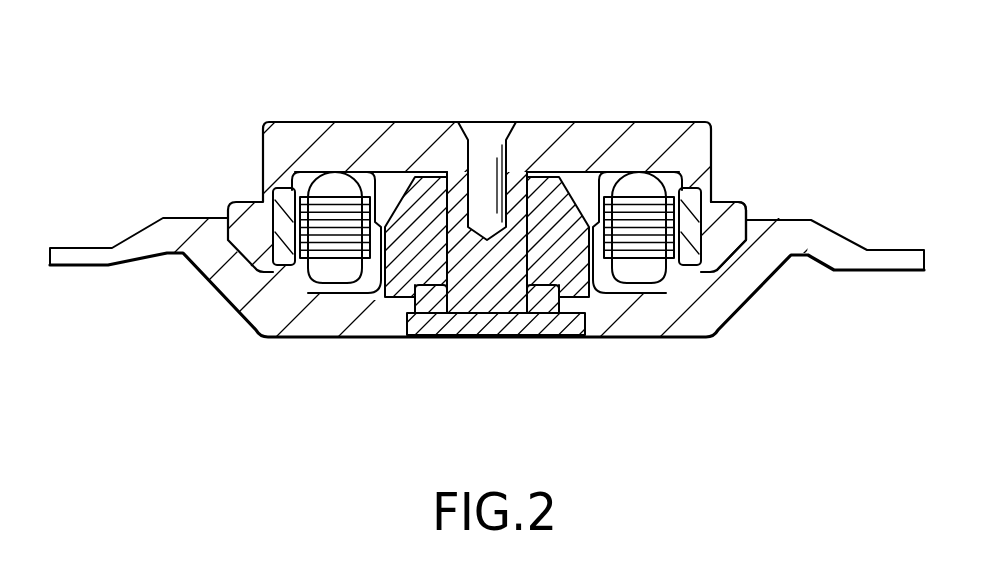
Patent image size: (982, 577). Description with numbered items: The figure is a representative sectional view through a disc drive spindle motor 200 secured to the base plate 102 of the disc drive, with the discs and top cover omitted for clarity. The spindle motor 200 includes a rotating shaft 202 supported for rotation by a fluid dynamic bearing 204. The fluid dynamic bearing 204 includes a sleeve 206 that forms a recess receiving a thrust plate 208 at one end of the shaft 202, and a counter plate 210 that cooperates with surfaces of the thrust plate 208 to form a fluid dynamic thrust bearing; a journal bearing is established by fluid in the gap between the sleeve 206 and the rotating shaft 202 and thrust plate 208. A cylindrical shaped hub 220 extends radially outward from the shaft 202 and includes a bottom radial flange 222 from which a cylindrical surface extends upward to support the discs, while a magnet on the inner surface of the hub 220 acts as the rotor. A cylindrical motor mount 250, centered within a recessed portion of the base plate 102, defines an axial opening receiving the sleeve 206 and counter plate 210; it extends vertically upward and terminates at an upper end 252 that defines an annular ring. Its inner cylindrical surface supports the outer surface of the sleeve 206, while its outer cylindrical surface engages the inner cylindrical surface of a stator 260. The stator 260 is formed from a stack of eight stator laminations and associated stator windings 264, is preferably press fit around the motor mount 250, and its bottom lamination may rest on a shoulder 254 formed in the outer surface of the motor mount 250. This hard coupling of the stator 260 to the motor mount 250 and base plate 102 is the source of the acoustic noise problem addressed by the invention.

The spindle motor 200 is at (259, 94).
The base plate 102 is at (123, 257).
The rotating shaft 202 is at (502, 303).
The fluid dynamic bearing 204 is at (431, 354).
The sleeve 206 is at (548, 195).
The thrust plate 208 is at (543, 305).
The counter plate 210 is at (458, 327).
The hub 220 is at (277, 143).
The bottom radial flange 222 is at (723, 200).
The cylindrical motor mount 250 is at (597, 253).
The upper end 252 is at (383, 225).
The shoulder 254 is at (367, 292).
The stator 260 is at (293, 282).
The stator windings 264 is at (333, 180).